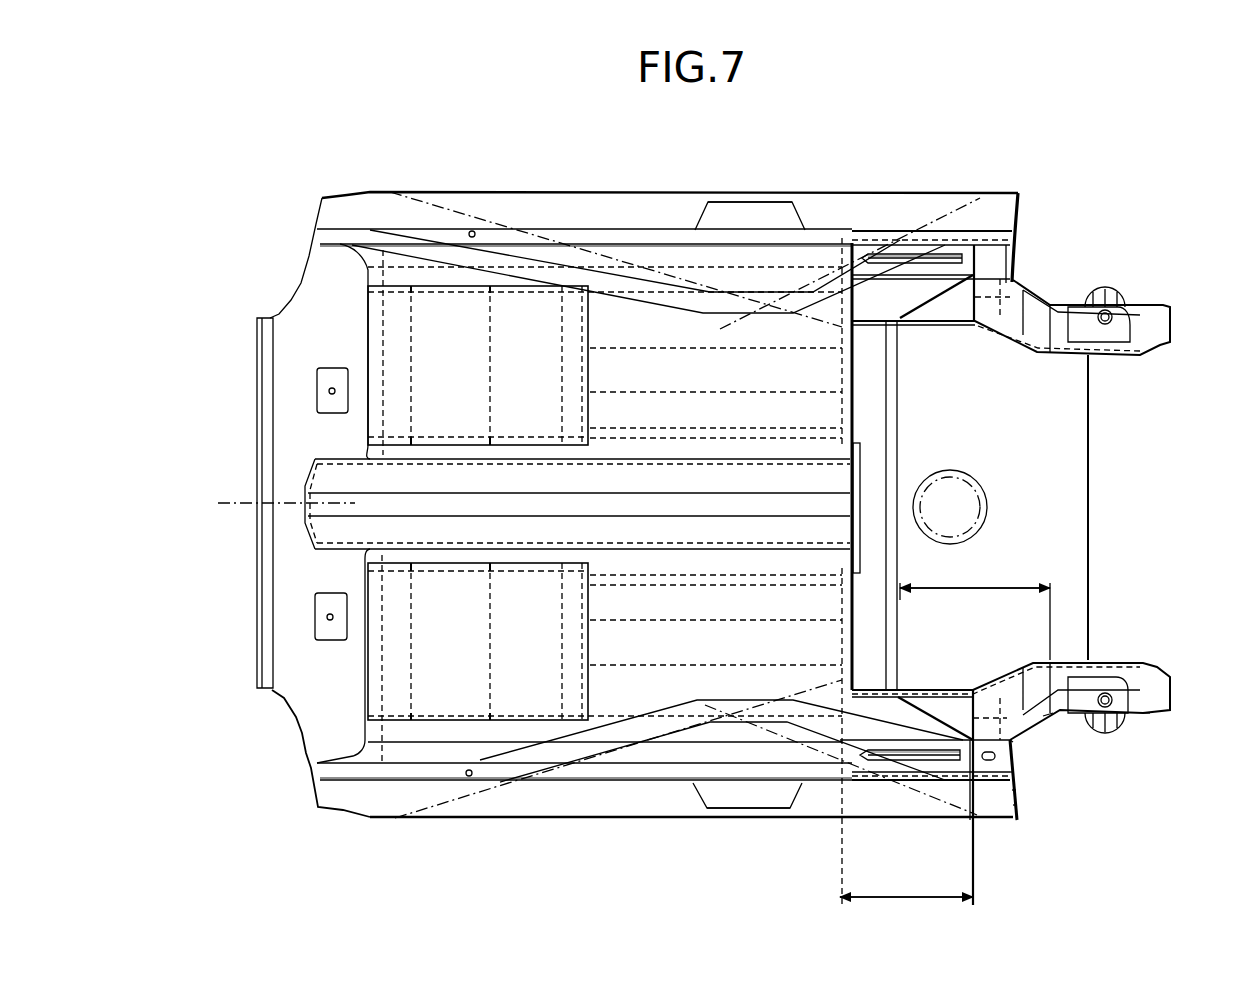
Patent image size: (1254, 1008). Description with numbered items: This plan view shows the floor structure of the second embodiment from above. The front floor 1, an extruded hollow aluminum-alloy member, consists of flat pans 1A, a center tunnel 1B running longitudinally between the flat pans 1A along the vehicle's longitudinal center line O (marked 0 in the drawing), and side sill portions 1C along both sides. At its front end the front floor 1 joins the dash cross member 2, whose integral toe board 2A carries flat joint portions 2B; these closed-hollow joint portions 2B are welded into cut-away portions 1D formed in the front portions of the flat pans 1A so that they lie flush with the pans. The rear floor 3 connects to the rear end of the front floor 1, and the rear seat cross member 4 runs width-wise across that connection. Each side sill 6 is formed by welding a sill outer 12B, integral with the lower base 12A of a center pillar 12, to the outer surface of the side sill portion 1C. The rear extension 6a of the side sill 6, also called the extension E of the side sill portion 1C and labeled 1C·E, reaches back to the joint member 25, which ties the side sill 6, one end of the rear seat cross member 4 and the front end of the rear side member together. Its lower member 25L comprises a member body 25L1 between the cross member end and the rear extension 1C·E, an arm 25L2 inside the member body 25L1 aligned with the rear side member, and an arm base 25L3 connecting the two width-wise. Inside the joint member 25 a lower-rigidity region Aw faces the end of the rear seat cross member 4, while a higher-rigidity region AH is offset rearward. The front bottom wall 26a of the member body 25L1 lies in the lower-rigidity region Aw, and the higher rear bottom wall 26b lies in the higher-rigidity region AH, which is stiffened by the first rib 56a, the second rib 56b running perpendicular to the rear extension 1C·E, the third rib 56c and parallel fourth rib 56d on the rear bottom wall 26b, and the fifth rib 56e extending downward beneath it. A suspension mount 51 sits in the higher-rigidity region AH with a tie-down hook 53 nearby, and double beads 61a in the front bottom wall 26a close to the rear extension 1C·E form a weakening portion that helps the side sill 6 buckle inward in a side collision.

The front floor 1 is at (661, 548).
The flat pans 1A is at (593, 360).
The center tunnel 1B is at (670, 475).
The side sill portions 1C is at (605, 228).
The cut-away portions 1D is at (578, 331).
The rear extension of the side sill portion E is at (968, 236).
The dash cross member 2 is at (280, 507).
The toe board 2A is at (283, 632).
The flat joint portions 2B is at (392, 330).
The longitudinal center line 0 is at (243, 505).
The rear floor 3 is at (1093, 520).
The rear seat cross member 4 is at (905, 457).
The side sills 6 is at (545, 232).
The rear extension of the side sill 6a is at (907, 232).
The center pillars 12 is at (749, 505).
The lower base 12A is at (757, 298).
The sill outers 12B is at (600, 818).
The joint member 25 is at (968, 332).
The lower member 25L is at (1044, 520).
The member body 25L1 is at (920, 690).
The arm 25L2 is at (1145, 715).
The arm base 25L3 is at (1045, 716).
The front bottom wall 26a is at (840, 712).
The rear bottom wall 26b is at (950, 705).
The suspension mount 51 is at (1020, 795).
The tie-down hook 53 is at (1015, 770).
The first rib 56a is at (893, 707).
The second rib 56b is at (1015, 803).
The third rib 56c is at (983, 700).
The fourth rib 56d is at (1015, 732).
The fifth rib 56e is at (1002, 698).
The double beads 61a is at (895, 767).
The higher-rigidity region AH is at (975, 576).
The lower-rigidity region Aw is at (906, 914).